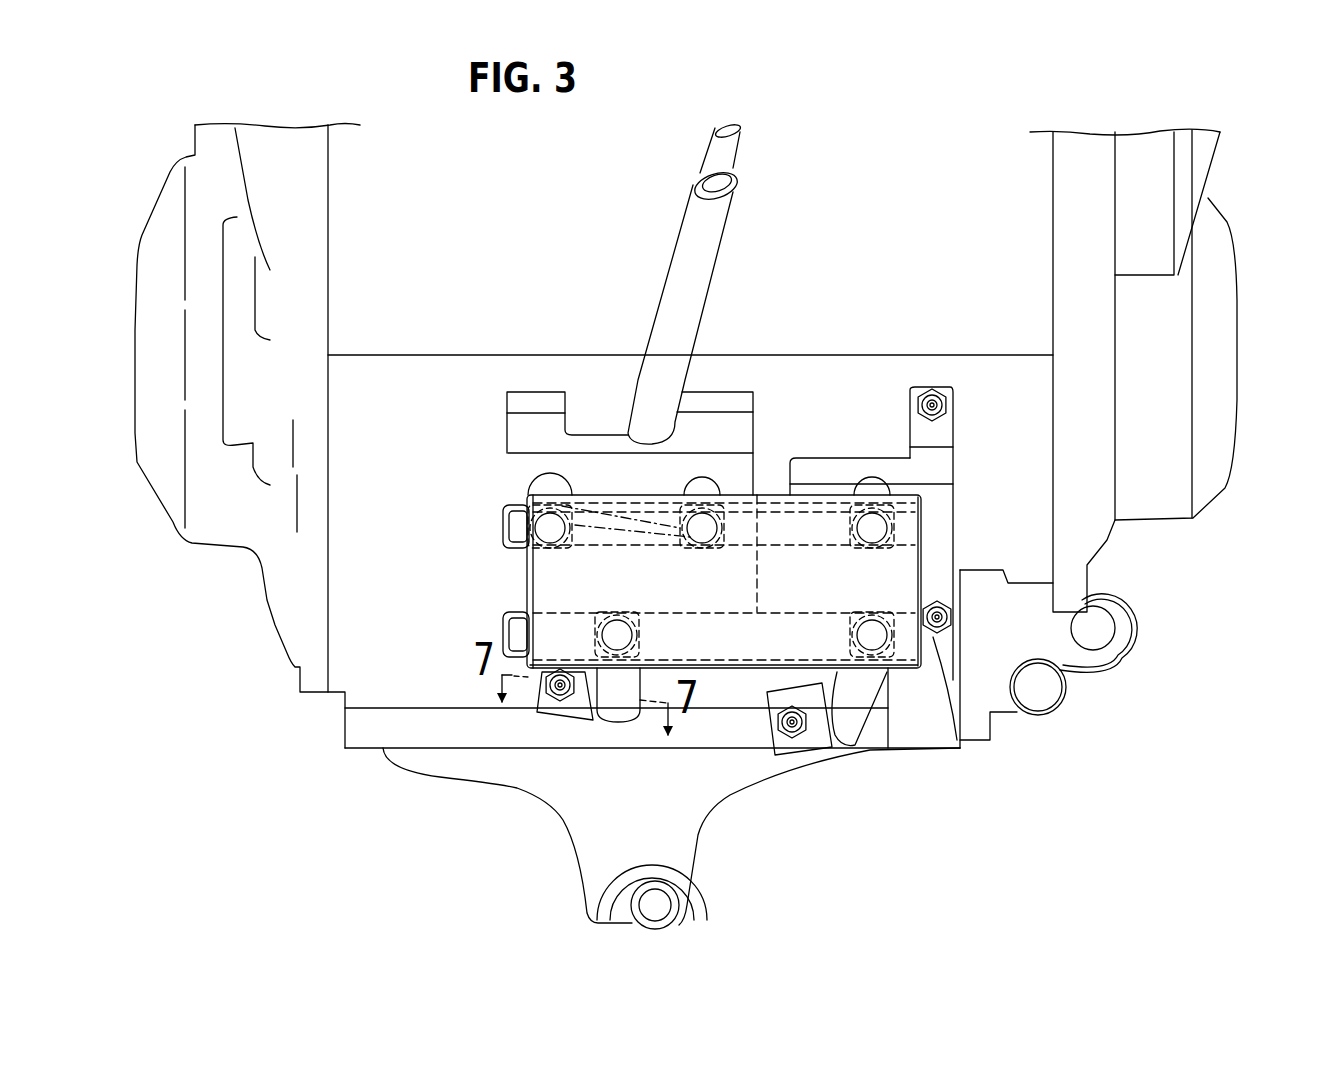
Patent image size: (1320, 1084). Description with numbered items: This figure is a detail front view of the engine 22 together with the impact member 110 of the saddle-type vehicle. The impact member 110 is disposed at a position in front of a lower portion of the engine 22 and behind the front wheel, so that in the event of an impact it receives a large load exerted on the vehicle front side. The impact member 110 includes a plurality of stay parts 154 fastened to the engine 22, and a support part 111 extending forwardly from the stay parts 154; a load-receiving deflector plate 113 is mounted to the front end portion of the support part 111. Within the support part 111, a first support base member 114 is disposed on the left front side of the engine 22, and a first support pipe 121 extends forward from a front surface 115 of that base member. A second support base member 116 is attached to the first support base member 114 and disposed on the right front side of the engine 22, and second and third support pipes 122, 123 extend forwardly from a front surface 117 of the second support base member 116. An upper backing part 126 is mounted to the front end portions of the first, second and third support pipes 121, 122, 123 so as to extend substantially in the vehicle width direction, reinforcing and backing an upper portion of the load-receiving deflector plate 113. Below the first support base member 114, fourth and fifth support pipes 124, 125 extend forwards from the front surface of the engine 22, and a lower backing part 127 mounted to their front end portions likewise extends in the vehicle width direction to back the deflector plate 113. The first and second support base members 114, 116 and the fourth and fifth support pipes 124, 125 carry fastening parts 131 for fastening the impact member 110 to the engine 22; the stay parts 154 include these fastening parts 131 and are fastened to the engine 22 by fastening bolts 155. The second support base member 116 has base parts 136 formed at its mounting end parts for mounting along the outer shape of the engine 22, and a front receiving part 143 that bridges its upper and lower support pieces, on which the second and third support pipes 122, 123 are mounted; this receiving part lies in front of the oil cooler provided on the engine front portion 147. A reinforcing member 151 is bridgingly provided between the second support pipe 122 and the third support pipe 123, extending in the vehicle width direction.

The engine 22 is at (1202, 534).
The impact member 110 is at (864, 774).
The support part 111 is at (548, 455).
The load-receiving deflector plate 113 is at (609, 589).
The first support base member 114 is at (818, 438).
The front surface 115 is at (867, 486).
The second support base member 116 is at (556, 394).
The front surface 117 is at (615, 437).
The first support pipe 121 is at (830, 495).
The second support pipe 122 is at (780, 490).
The third support pipe 123 is at (603, 480).
The fourth support pipe 124 is at (860, 710).
The fifth support pipe 125 is at (630, 688).
The upper backing part 126 is at (503, 510).
The lower backing part 127 is at (503, 635).
The fastening part 131 is at (948, 585).
The base part 136 is at (515, 405).
The front receiving part 143 is at (717, 473).
The engine front portion 147 is at (490, 682).
The reinforcing member 151 is at (600, 527).
The stay part 154 is at (969, 385).
The fastening bolt 155 is at (930, 390).